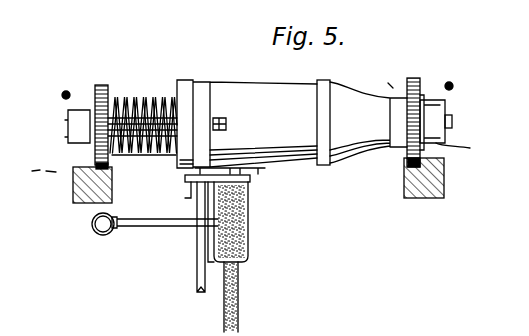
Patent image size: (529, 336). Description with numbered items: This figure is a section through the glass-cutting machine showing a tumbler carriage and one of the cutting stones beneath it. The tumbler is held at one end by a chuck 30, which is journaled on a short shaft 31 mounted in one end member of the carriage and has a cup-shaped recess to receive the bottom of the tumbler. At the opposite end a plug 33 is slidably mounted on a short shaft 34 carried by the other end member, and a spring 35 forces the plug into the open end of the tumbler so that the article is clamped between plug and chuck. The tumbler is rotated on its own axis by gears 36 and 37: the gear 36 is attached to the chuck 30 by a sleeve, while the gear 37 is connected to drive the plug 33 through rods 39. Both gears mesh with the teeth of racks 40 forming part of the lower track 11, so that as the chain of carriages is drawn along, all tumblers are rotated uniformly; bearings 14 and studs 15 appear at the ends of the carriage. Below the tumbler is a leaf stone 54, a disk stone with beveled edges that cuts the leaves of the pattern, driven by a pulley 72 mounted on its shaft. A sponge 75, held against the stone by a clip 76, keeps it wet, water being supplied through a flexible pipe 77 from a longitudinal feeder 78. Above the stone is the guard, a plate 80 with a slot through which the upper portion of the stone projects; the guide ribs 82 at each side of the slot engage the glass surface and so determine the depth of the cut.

The housing 11 is at (385, 78).
The bearing 14 is at (90, 131).
The stud 15 is at (64, 92).
The chuck 30 is at (362, 122).
The short shaft 31 is at (453, 121).
The plug 33 is at (187, 84).
The short shaft 34 is at (161, 96).
The spring 35 is at (127, 99).
The gear 36 is at (416, 79).
The gear 37 is at (104, 86).
The rods 39 is at (157, 160).
The racks 40 is at (108, 172).
The leaf stone 54 is at (246, 287).
The pulley 72 is at (204, 268).
The sponge 75 is at (230, 236).
The clip 76 is at (246, 256).
The flexible pipe 77 is at (158, 228).
The longitudinal feeder 78 is at (91, 233).
The plate 80 is at (245, 181).
The guide ribs 82 is at (255, 168).